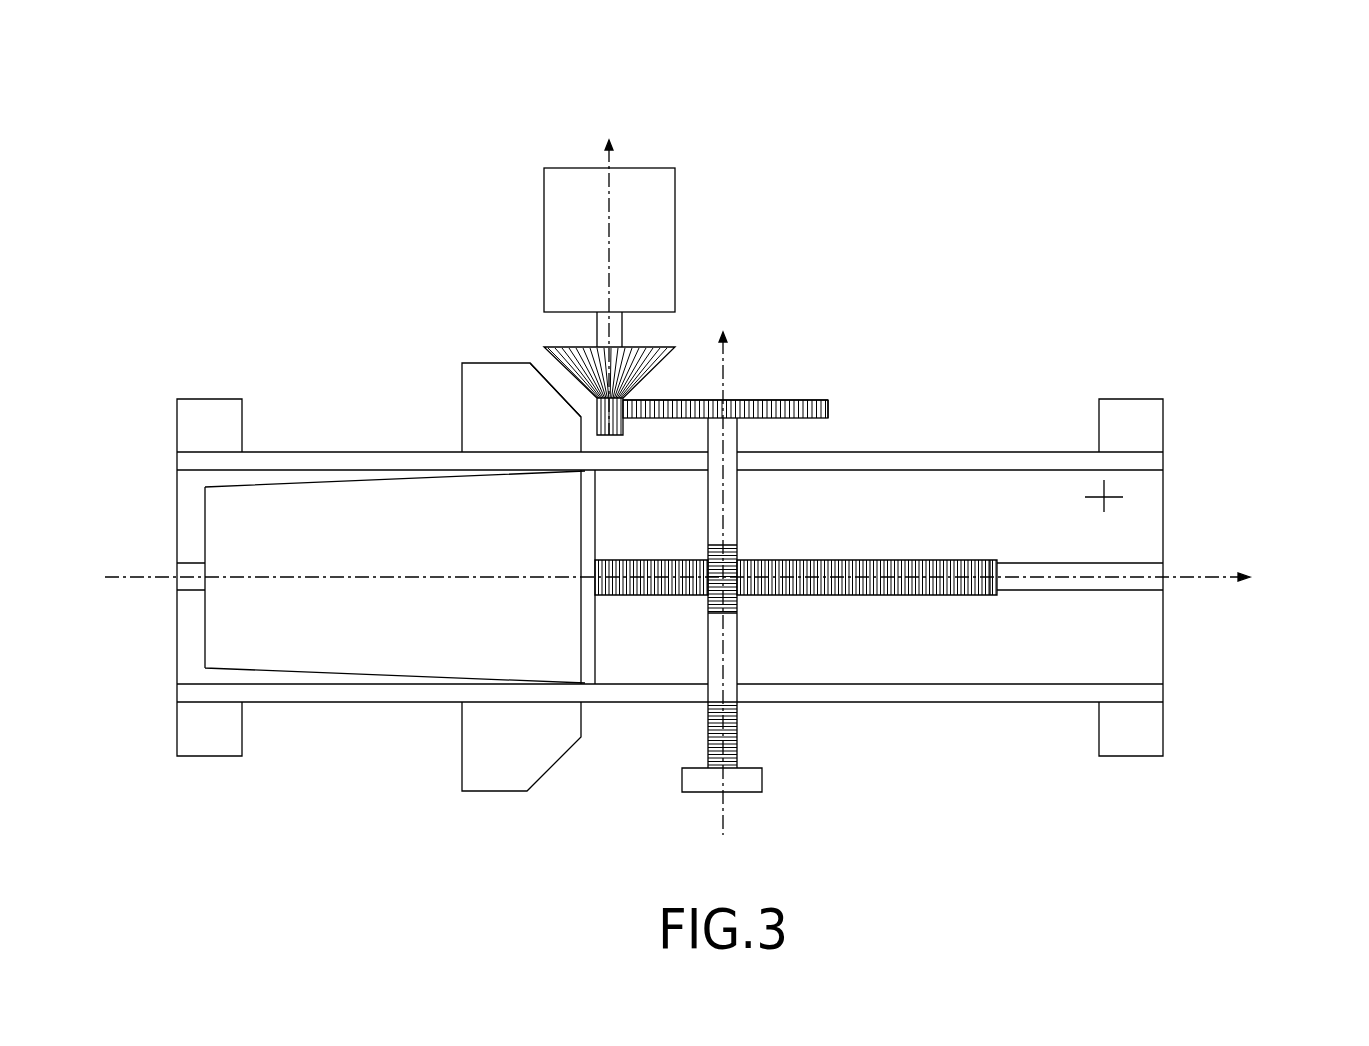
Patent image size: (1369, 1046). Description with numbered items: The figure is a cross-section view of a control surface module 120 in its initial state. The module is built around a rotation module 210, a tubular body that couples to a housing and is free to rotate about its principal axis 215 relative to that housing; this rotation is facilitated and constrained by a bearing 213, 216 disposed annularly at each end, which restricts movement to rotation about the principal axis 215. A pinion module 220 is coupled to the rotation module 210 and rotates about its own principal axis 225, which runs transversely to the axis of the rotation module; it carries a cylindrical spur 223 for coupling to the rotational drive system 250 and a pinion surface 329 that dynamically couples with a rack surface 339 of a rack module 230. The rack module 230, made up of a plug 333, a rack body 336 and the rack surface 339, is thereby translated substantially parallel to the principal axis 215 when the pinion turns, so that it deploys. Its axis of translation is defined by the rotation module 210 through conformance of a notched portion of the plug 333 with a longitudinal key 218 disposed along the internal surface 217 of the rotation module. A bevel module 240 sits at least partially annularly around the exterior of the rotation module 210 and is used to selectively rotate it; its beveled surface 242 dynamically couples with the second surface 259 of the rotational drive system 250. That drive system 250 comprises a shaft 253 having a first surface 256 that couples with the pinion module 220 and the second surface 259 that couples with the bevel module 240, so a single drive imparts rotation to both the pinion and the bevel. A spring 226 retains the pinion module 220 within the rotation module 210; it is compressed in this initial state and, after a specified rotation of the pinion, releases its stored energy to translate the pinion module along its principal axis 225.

The control surface module 120 is at (1053, 180).
The rotation module 210 is at (975, 453).
The bearing 213 is at (1125, 399).
The principal axis of rotation module 215 is at (1230, 580).
The bearing 216 is at (208, 398).
The internal surface of rotation module 217 is at (1123, 497).
The longitudinal key 218 is at (1147, 573).
The pinion module 220 is at (780, 400).
The cylindrical spur 223 is at (805, 407).
The principal axis of pinion module 225 is at (609, 150).
The spring 226 is at (737, 740).
The rack module 230 is at (222, 532).
The bevel module 240 is at (478, 363).
The beveled surface 242 is at (537, 372).
The rotational drive system 250 is at (675, 183).
The shaft 253 is at (622, 318).
The first surface 256 is at (623, 427).
The second surface 259 is at (650, 372).
The pinion surface 329 is at (738, 555).
The plug 333 is at (588, 660).
The rack body 336 is at (940, 592).
The rack surface 339 is at (840, 578).